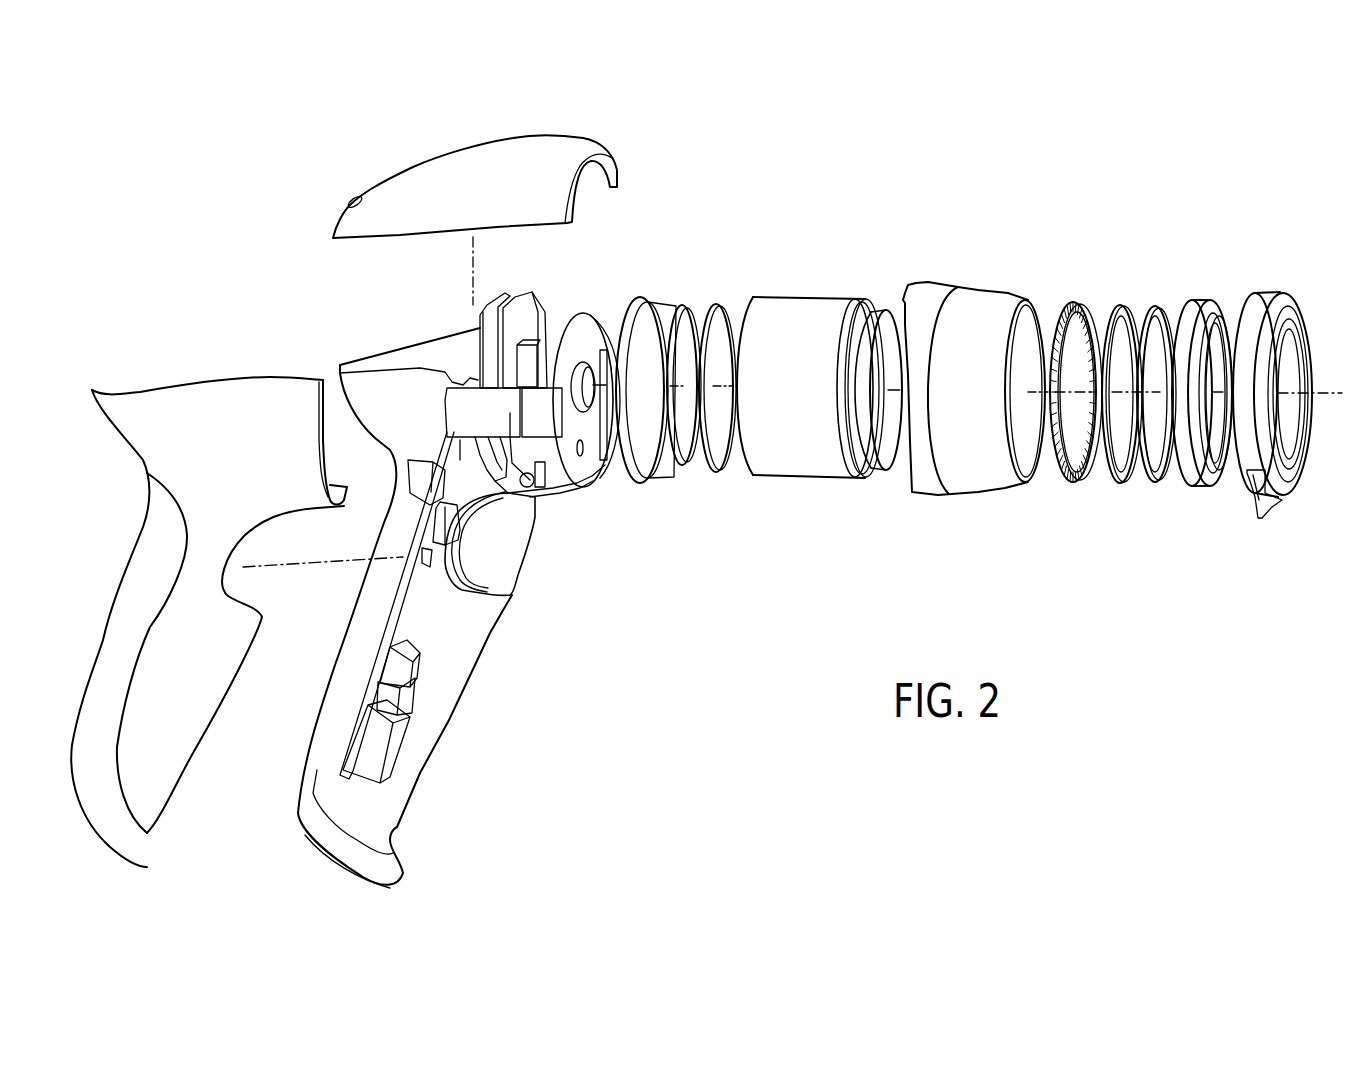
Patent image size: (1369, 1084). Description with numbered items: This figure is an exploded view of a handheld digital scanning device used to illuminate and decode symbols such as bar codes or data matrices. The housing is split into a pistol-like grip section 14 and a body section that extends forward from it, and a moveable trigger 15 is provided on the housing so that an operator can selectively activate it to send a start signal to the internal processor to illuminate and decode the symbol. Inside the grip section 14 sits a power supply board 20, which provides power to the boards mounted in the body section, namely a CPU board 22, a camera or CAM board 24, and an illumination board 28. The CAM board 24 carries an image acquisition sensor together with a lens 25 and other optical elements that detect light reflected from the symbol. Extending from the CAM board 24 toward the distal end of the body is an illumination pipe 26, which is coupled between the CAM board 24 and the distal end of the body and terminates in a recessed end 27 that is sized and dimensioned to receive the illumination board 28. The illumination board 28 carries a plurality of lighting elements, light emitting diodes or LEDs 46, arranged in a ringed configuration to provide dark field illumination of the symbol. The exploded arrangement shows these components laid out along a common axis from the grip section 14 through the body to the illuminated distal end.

The grip section 14 is at (478, 708).
The trigger 15 is at (513, 537).
The power supply board 20 is at (400, 668).
The CPU board 22 is at (497, 300).
The CAM board 24 is at (520, 297).
The lens 25 is at (550, 323).
The illumination pipe 26 is at (810, 297).
The recessed end 27 is at (880, 310).
The illumination board 28 is at (1073, 303).
The LEDs 46 is at (1097, 310).